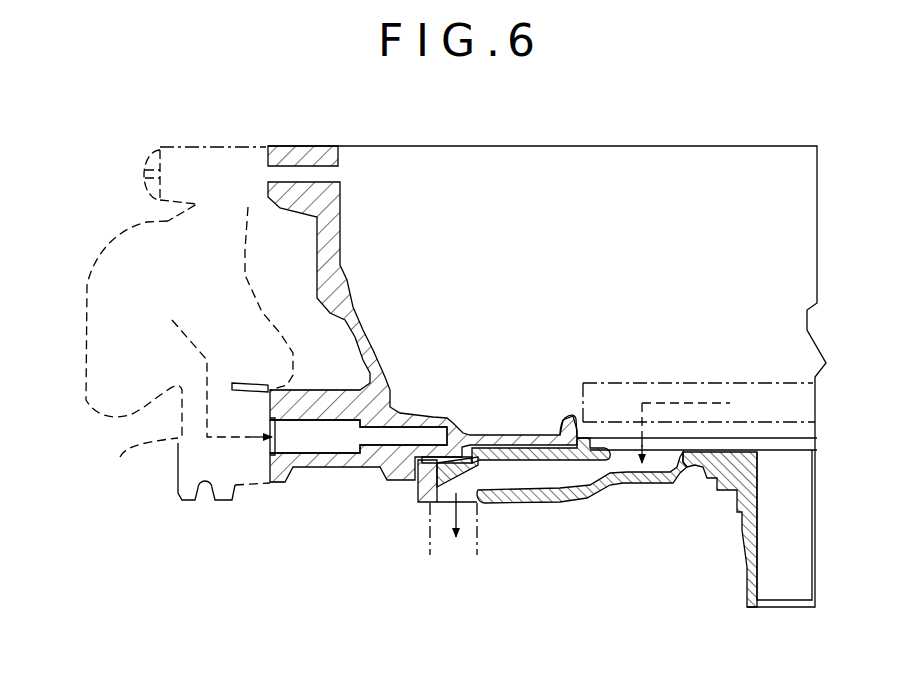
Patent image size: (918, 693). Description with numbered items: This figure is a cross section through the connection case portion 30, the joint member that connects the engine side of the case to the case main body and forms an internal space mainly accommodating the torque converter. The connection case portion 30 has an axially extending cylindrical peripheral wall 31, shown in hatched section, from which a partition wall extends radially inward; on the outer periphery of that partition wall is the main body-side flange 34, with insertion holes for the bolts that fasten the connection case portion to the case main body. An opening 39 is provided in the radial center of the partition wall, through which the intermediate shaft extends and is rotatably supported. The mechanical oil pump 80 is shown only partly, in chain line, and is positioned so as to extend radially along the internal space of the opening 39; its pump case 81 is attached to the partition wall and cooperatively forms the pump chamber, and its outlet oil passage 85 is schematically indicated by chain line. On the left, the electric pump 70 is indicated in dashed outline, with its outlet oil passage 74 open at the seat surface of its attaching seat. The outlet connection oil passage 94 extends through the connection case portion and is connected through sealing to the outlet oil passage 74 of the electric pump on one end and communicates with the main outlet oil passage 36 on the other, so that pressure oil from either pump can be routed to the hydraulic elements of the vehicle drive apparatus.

The connection case portion 30 is at (322, 136).
The peripheral wall 31 is at (340, 262).
The main body-side flange 34 is at (398, 465).
The main outlet oil passage 36 is at (525, 474).
The opening 39 is at (572, 410).
The electric pump 70 is at (130, 231).
The outlet oil passage 74 is at (187, 466).
The mechanical oil pump 80 is at (762, 388).
The pump case 81 is at (714, 487).
The outlet oil passage 85 is at (681, 388).
The outlet connection oil passage 94 is at (291, 442).